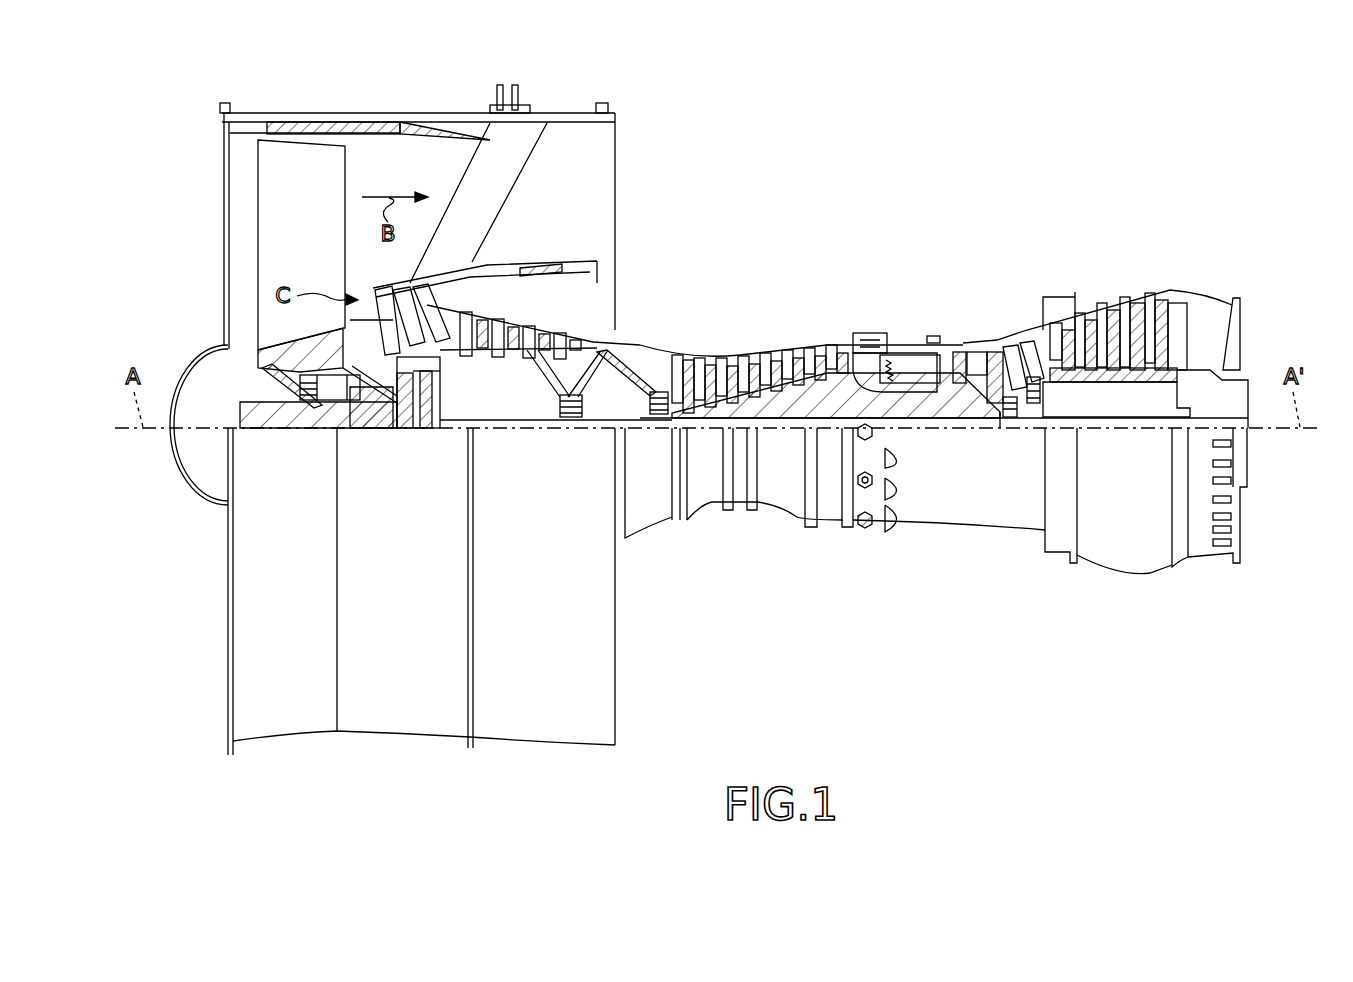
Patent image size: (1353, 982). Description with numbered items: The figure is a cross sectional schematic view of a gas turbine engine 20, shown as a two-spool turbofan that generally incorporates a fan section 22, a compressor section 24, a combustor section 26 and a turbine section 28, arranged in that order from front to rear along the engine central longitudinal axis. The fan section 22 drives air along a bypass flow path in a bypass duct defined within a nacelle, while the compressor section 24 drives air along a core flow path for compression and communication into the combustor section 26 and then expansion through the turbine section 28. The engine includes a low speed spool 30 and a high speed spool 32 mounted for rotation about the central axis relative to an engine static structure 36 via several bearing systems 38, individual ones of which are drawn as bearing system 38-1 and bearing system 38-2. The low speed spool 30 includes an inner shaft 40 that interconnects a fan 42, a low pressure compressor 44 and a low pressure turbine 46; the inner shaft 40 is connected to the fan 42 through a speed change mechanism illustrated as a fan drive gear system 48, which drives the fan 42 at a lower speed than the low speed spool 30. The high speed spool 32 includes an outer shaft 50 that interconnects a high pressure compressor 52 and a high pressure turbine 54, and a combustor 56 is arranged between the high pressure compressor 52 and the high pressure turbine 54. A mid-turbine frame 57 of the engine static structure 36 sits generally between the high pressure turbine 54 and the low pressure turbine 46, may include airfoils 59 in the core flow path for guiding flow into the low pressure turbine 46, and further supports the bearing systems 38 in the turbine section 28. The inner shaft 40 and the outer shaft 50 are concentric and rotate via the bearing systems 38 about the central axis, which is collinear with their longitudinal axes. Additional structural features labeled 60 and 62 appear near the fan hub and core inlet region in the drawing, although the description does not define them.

The gas turbine engine 20 is at (965, 140).
The fan section 22 is at (465, 95).
The compressor section 24 is at (473, 225).
The combustor section 26 is at (848, 225).
The turbine section 28 is at (1180, 225).
The low speed spool 30 is at (785, 470).
The high speed spool 32 is at (825, 395).
The engine static structure 36 is at (207, 748).
The bearing systems 38 is at (1015, 430).
The bearing system 38-1 is at (312, 402).
The bearing system 38-2 is at (560, 417).
The inner shaft 40 is at (638, 430).
The fan 42 is at (301, 245).
The low pressure compressor 44 is at (550, 325).
The low pressure turbine 46 is at (1108, 318).
The fan drive gear system 48 is at (433, 456).
The outer shaft 50 is at (908, 420).
The high pressure compressor 52 is at (787, 366).
The high pressure turbine 54 is at (980, 340).
The combustor 56 is at (913, 368).
The mid-turbine frame 57 is at (1025, 330).
The airfoils 59 is at (1040, 325).
The core airflow path 60 is at (440, 405).
The bypass flow path / splitter 62 is at (433, 367).